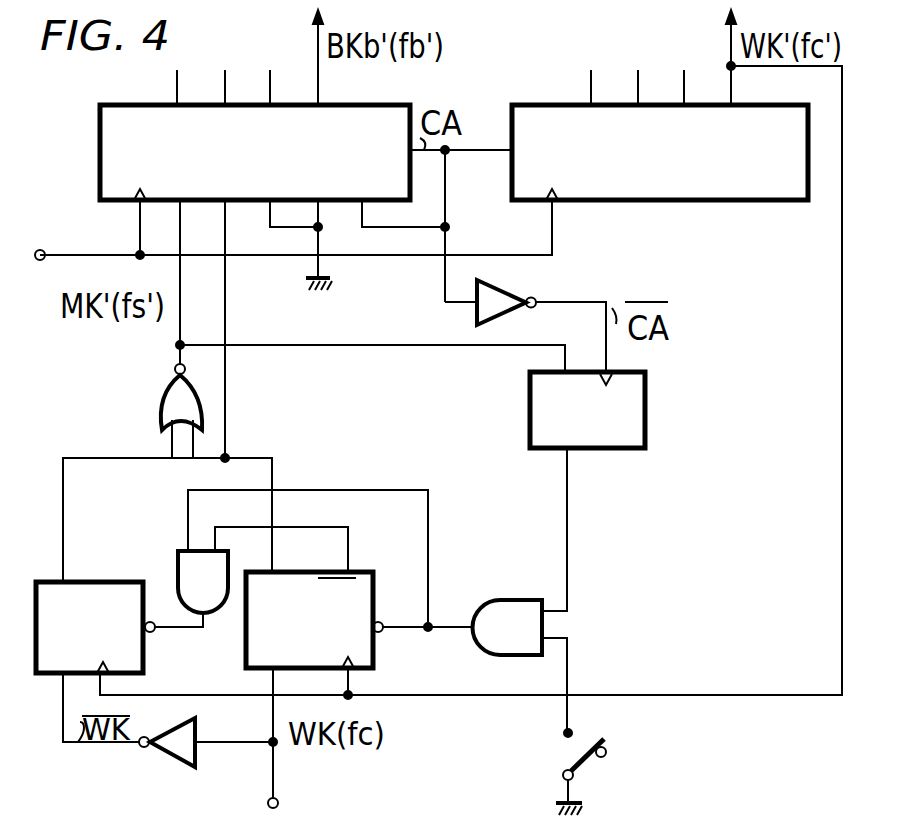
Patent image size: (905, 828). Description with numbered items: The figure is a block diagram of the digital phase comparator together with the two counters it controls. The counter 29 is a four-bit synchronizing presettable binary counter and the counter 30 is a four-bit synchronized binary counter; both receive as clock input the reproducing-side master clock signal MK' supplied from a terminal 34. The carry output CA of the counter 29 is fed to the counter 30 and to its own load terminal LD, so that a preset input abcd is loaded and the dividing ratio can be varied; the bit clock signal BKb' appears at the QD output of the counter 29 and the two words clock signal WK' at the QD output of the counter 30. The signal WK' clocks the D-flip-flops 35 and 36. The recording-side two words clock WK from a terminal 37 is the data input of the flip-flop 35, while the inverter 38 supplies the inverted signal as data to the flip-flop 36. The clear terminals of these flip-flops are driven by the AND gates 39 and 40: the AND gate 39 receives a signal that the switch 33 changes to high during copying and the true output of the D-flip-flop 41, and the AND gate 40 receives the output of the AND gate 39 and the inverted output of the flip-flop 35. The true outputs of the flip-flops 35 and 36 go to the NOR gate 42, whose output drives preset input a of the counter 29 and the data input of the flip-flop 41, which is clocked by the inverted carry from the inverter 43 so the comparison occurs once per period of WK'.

The counter 29 is at (100, 123).
The counter 30 is at (549, 102).
The switch 33 is at (566, 752).
The terminal 34 is at (58, 236).
The D-flip-flop 35 is at (352, 568).
The D-flip-flop 36 is at (120, 580).
The terminal 37 is at (278, 800).
The inverter 38 is at (196, 758).
The AND gate 39 is at (512, 598).
The AND gate 40 is at (182, 546).
The D-flip-flop 41 is at (647, 432).
The NOR gate 42 is at (166, 394).
The inverter 43 is at (505, 290).